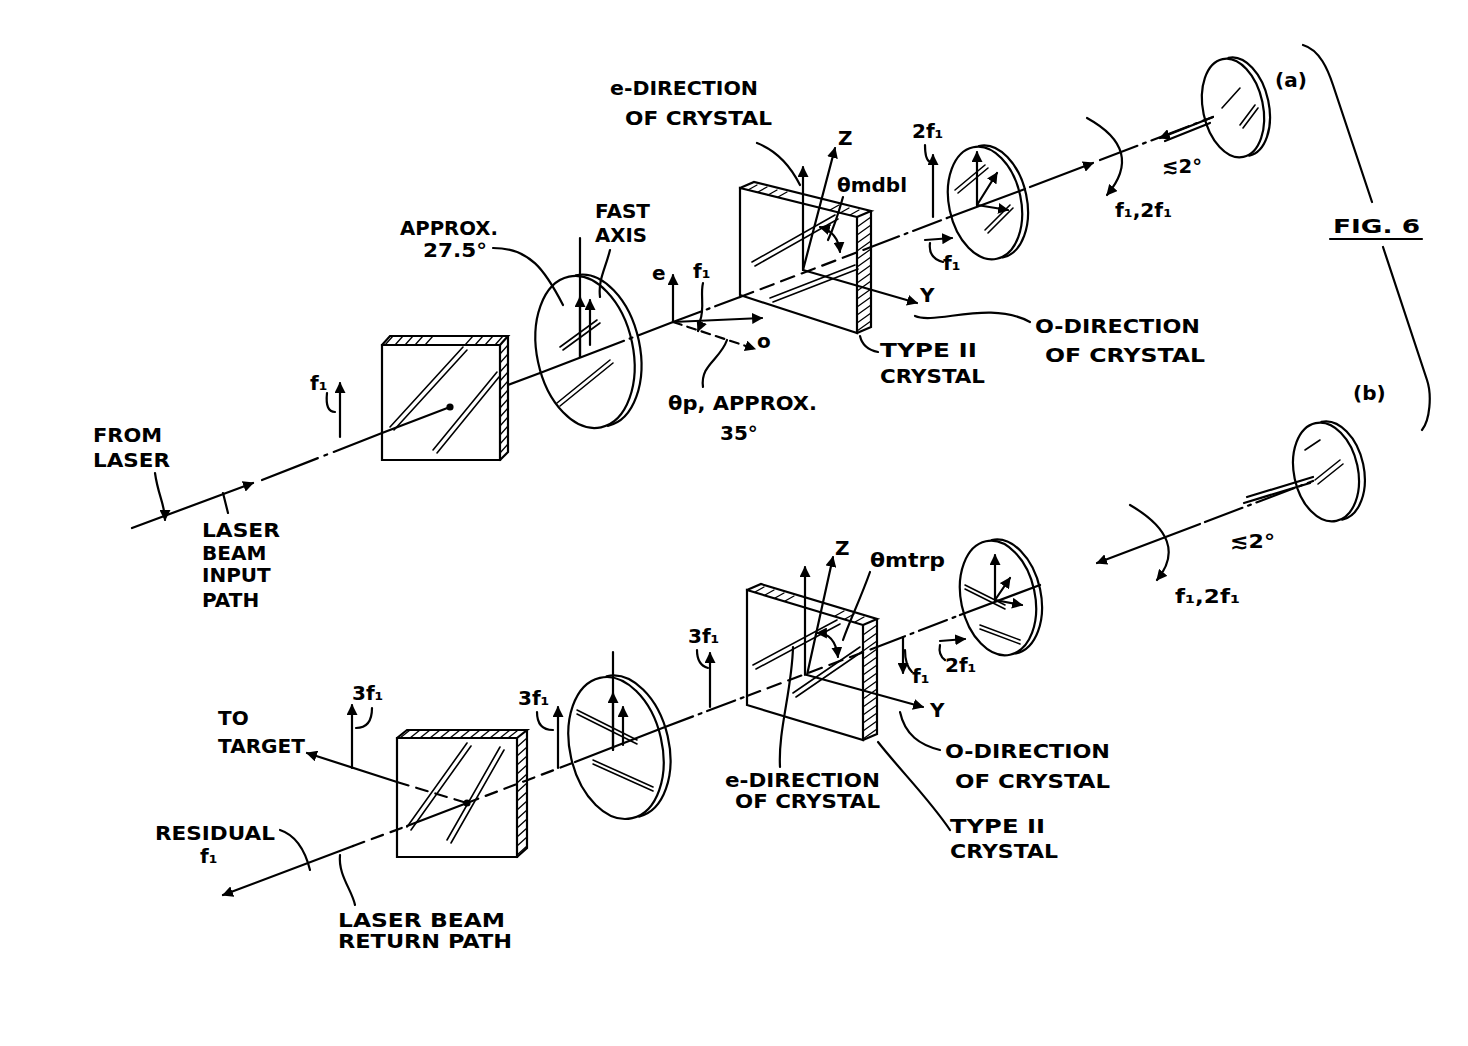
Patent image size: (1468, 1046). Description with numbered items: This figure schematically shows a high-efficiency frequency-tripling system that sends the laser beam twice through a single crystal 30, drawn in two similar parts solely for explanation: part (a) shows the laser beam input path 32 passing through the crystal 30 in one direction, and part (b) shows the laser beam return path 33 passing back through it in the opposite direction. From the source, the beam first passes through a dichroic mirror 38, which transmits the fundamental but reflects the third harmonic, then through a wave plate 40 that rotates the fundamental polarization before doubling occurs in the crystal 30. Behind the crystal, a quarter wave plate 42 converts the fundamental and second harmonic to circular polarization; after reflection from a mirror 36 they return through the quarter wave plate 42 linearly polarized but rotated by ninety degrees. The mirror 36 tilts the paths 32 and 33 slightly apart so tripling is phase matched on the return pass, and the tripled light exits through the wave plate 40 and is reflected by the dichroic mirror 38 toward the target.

The crystal 30 is at (805, 318).
The laser beam input path 32 is at (525, 383).
The laser beam return path 33 is at (675, 722).
The mirror 36 is at (1297, 446).
The dichroic mirror 38 is at (457, 735).
The wave plate 40 is at (597, 680).
The quarter wave plate 42 is at (1003, 543).